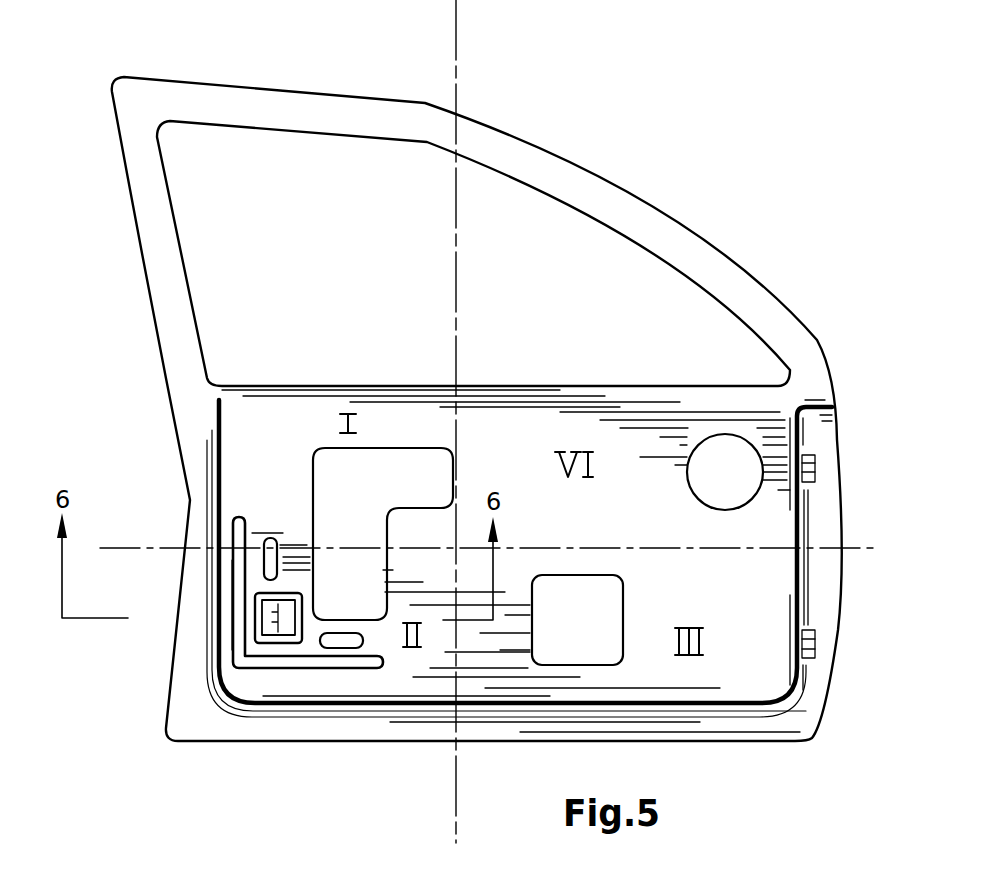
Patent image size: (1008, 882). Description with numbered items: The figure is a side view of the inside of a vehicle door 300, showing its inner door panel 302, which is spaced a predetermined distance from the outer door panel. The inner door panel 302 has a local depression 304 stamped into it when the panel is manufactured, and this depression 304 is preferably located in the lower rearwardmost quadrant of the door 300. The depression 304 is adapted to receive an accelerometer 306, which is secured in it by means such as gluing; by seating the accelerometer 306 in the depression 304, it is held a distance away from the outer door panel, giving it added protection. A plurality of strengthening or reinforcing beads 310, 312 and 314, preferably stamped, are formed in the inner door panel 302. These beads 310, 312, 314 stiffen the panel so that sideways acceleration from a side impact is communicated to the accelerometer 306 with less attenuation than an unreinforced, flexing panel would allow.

The vehicle door 300 is at (110, 352).
The inner door panel 302 is at (245, 433).
The local depression 304 is at (298, 595).
The accelerometer 306 is at (250, 652).
The strengthening bead 310 is at (250, 522).
The strengthening bead 312 is at (280, 548).
The strengthening bead 314 is at (333, 633).